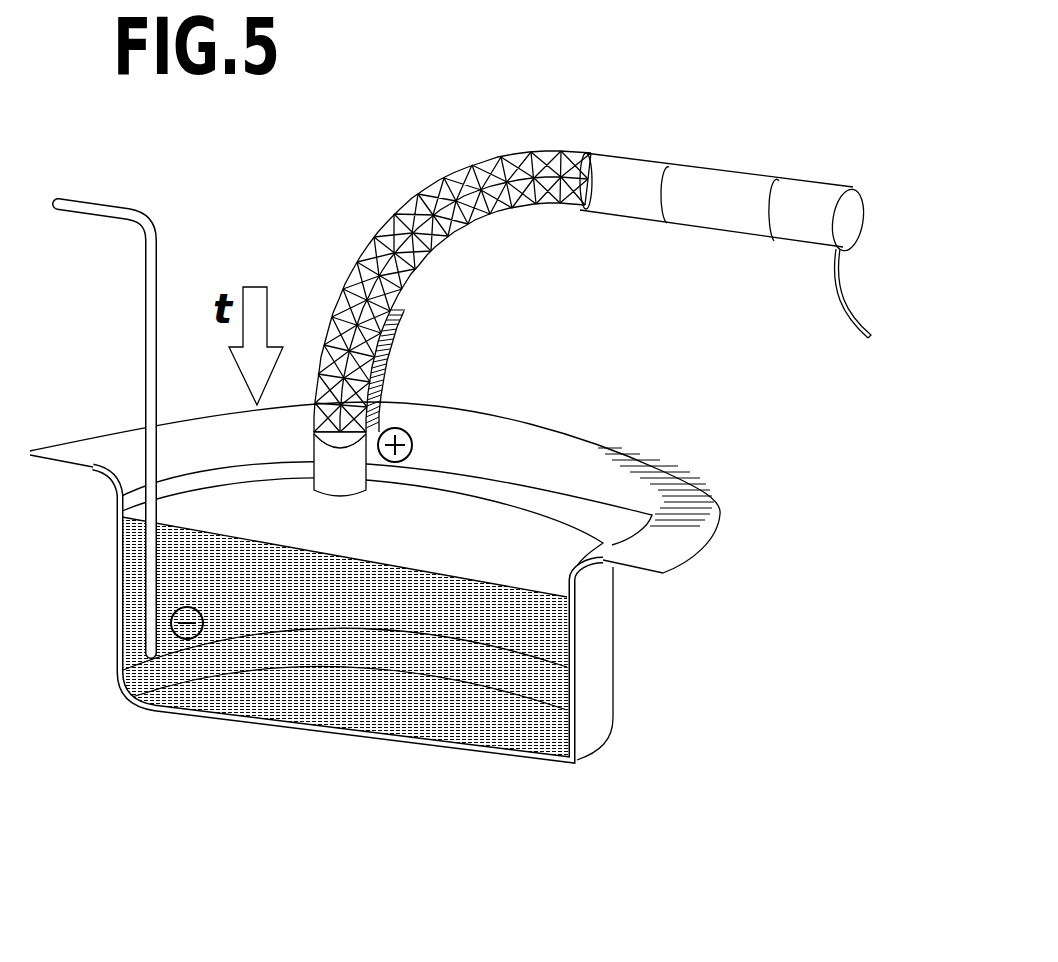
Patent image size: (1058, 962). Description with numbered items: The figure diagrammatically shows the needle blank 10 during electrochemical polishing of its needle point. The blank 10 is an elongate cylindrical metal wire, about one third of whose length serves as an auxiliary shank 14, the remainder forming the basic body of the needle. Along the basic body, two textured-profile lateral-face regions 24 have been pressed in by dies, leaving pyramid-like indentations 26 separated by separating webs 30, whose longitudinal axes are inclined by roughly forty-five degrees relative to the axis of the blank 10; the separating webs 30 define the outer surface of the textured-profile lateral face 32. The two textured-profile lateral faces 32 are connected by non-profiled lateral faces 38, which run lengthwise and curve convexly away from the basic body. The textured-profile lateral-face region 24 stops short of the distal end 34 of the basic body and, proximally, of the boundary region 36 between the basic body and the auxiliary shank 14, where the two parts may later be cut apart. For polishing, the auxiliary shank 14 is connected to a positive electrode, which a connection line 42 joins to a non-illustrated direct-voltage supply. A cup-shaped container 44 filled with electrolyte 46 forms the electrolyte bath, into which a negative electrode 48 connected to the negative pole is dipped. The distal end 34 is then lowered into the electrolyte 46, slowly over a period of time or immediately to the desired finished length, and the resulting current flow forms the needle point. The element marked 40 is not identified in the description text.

The blank 10 is at (577, 294).
The auxiliary shank 14 is at (737, 188).
The textured-profile lateral-face region 24 is at (437, 278).
The pyramid-like indentation 26 is at (487, 167).
The separating web 30 is at (338, 318).
The textured-profile lateral face 32 is at (404, 202).
The distal end 34 is at (347, 488).
The boundary region 36 is at (658, 205).
The non-profiled lateral face 38 is at (382, 316).
The connector 40 is at (813, 203).
The connection line 42 is at (843, 318).
The cup-shaped container 44 is at (572, 430).
The electrolyte 46 is at (302, 720).
The negative electrode 48 is at (105, 208).